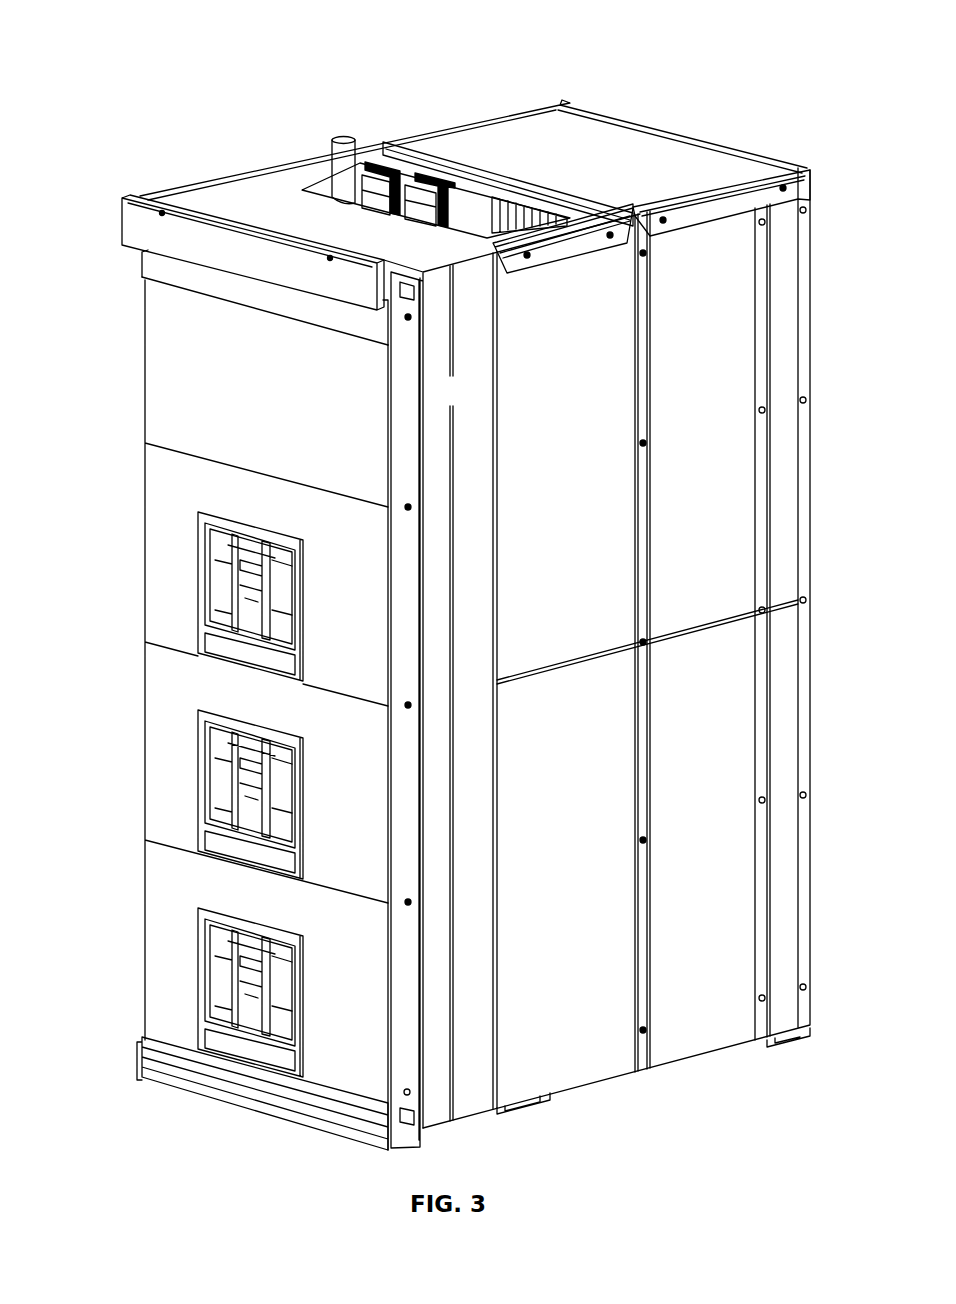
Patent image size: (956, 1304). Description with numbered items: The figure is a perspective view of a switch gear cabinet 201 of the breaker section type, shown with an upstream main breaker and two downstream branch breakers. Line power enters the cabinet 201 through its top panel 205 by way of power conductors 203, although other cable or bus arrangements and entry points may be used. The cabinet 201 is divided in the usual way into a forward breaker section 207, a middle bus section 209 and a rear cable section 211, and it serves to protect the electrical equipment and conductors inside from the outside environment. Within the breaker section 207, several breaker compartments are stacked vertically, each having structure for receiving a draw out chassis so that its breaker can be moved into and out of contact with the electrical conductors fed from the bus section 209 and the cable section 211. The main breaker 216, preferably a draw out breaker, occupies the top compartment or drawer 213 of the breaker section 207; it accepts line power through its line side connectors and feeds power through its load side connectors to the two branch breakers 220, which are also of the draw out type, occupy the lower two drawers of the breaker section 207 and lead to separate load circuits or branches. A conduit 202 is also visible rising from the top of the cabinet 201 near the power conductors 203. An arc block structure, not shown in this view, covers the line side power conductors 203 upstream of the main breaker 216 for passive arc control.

The switch gear cabinet 201 is at (585, 552).
The conduit 202 is at (338, 158).
The power conductors 203 is at (425, 173).
The top panel 205 is at (683, 183).
The breaker section 207 is at (474, 404).
The bus section 209 is at (585, 374).
The cable section 211 is at (721, 330).
The top compartment or drawer 213 is at (208, 498).
The main breaker 216 is at (200, 575).
The branch breakers 220 is at (200, 773).